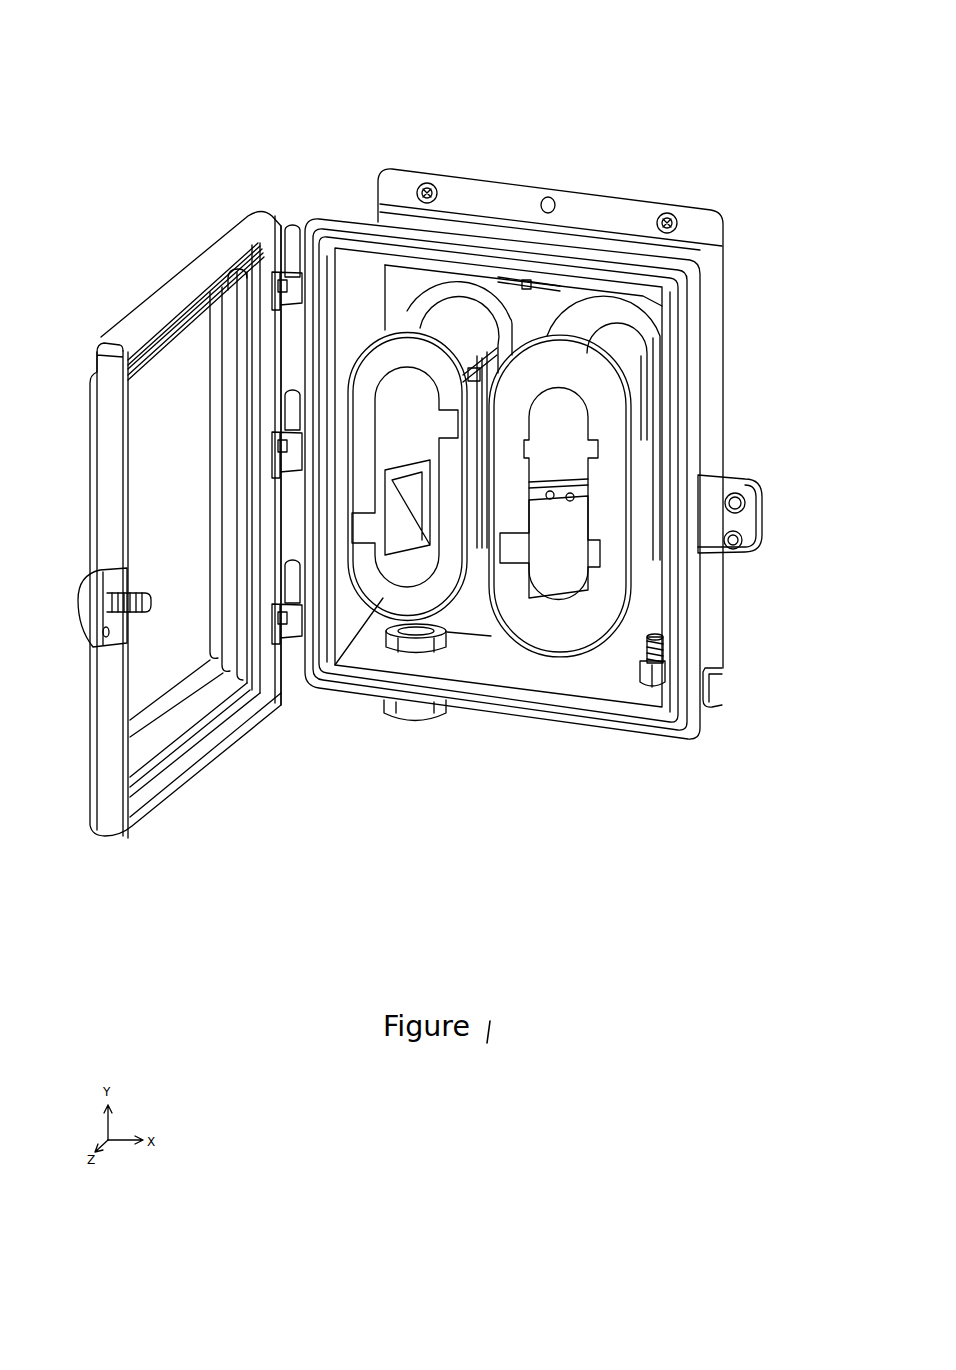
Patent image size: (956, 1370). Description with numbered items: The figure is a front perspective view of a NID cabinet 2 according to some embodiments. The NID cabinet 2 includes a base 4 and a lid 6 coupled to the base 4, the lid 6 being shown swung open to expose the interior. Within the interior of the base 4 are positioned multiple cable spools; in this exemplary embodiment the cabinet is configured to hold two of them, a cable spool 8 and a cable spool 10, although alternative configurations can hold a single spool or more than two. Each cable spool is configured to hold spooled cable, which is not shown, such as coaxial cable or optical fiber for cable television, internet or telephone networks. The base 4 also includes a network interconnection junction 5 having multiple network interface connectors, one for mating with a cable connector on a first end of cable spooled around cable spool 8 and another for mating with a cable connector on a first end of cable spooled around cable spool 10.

The NID cabinet 2 is at (639, 65).
The base 4 is at (714, 333).
The network interconnection junction 5 is at (530, 289).
The lid 6 is at (180, 283).
The cable spool 8 is at (385, 600).
The cable spool 10 is at (568, 640).